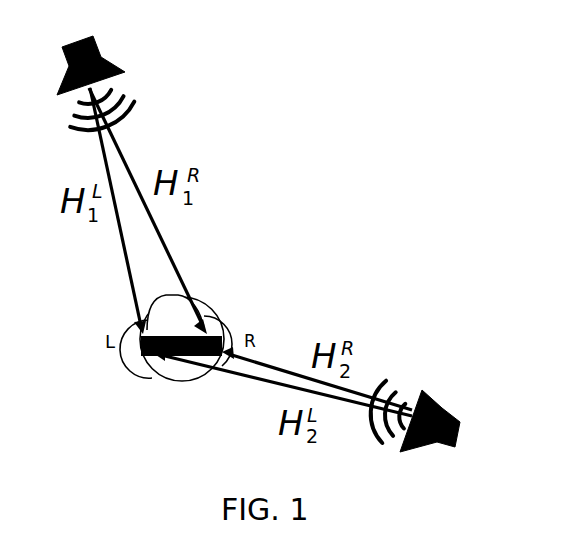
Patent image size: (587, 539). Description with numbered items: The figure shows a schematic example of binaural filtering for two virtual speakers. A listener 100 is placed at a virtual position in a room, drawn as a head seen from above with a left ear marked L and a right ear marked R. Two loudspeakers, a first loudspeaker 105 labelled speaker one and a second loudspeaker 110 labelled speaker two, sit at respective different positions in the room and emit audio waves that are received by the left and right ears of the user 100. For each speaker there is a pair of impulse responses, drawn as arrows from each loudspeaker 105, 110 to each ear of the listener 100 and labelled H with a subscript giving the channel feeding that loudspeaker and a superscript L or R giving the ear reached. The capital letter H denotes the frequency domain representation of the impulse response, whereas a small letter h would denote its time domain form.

The listener 100 is at (175, 289).
The loudspeaker 105 is at (112, 62).
The loudspeaker 110 is at (442, 402).